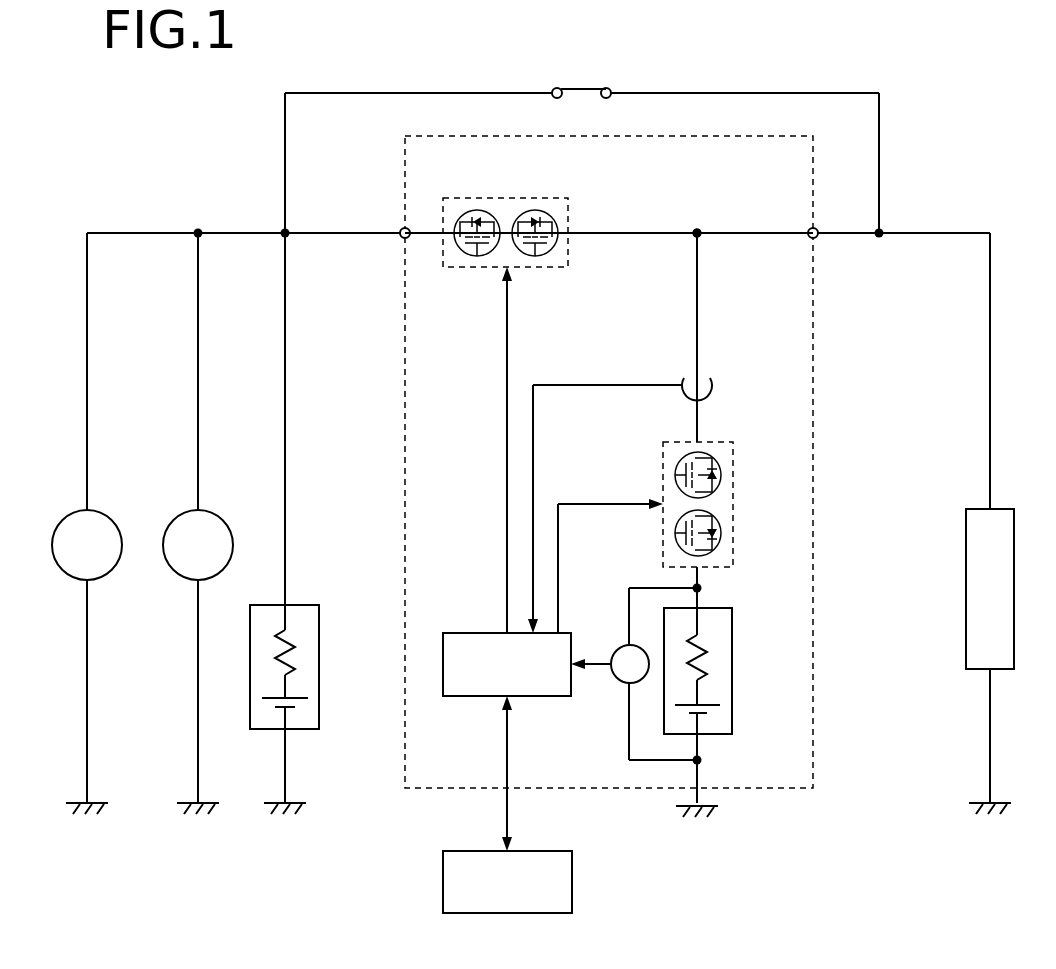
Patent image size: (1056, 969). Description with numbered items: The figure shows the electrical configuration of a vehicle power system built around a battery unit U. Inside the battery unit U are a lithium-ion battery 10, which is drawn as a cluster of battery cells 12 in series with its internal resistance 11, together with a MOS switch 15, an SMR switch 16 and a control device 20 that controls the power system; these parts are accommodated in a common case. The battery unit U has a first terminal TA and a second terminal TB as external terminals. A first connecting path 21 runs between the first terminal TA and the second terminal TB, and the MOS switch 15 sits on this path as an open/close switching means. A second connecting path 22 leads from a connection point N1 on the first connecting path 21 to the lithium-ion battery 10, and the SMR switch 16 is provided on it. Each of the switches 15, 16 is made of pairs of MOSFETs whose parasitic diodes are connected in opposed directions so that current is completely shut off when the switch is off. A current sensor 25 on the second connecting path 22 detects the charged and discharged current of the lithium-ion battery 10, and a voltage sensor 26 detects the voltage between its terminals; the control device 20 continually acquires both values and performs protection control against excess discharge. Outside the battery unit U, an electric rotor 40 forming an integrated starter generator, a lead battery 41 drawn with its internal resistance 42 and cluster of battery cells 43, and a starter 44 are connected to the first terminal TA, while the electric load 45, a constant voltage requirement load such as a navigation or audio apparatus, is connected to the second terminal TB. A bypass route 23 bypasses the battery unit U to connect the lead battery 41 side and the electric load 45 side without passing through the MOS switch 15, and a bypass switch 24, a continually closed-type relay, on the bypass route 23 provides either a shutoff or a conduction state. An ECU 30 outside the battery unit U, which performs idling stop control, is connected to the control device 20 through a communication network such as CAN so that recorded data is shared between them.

The lithium-ion battery 10 is at (728, 663).
The internal resistance 11 is at (704, 653).
The cluster of battery cells 12 is at (718, 695).
The MOS switch 15 is at (476, 198).
The SMR switch 16 is at (737, 454).
The control device 20 is at (460, 633).
The first connecting path 21 is at (632, 232).
The second connecting path 22 is at (697, 313).
The bypass route 23 is at (732, 92).
The bypass switch 24 is at (581, 88).
The current sensor 25 is at (712, 383).
The voltage sensor 26 is at (617, 650).
The ECU 30 is at (460, 851).
The electric rotor 40 is at (108, 512).
The lead battery 41 is at (315, 659).
The internal resistance 42 is at (300, 646).
The cluster of battery cells 43 is at (305, 699).
The starter 44 is at (218, 512).
The electric load 45 is at (998, 509).
The first terminal TA is at (400, 228).
The second terminal TB is at (818, 228).
The connection point N1 is at (698, 228).
The battery unit U is at (813, 650).